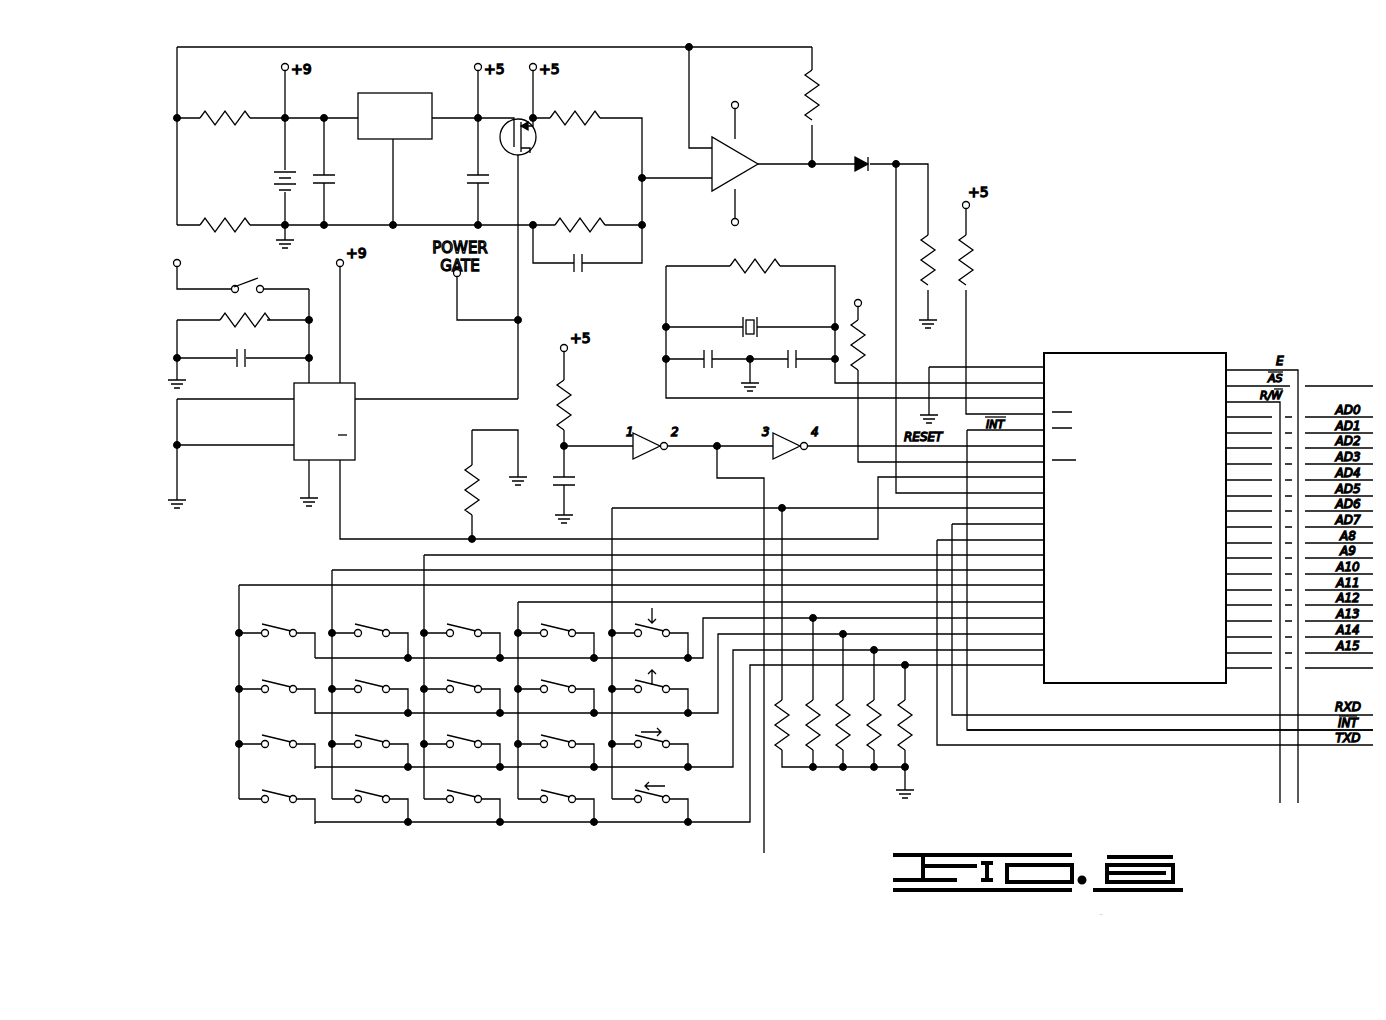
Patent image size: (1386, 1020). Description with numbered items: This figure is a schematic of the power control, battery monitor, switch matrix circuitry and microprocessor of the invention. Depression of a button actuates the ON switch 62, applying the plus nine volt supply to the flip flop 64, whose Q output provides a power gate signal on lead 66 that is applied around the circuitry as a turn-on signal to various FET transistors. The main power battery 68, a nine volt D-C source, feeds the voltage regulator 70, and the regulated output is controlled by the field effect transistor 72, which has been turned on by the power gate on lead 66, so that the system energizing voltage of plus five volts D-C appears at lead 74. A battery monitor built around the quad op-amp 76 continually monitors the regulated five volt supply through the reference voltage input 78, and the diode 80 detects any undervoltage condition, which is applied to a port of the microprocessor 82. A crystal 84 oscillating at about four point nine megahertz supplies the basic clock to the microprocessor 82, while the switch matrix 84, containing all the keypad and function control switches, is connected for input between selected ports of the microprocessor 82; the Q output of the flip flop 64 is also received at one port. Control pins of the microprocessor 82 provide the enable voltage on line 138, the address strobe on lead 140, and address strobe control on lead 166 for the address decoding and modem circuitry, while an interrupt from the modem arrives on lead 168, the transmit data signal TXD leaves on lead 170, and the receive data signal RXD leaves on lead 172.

The ON switch 62 is at (248, 284).
The flip flop 64 is at (357, 425).
The lead 66 is at (520, 196).
The main power battery 68 is at (287, 170).
The voltage regulator 70 is at (412, 94).
The field effect transistor 72 is at (535, 140).
The lead 74 is at (536, 108).
The quad op-amp 76 is at (752, 152).
The reference voltage input 78 is at (657, 181).
The diode 80 is at (870, 160).
The microprocessor 82 is at (1148, 352).
The switch matrix 84 is at (222, 607).
The line 138 is at (1300, 787).
The lead 140 is at (1278, 786).
The lead 166 is at (1320, 383).
The lead 168 is at (1143, 731).
The lead 170 is at (1163, 746).
The lead 172 is at (1143, 714).